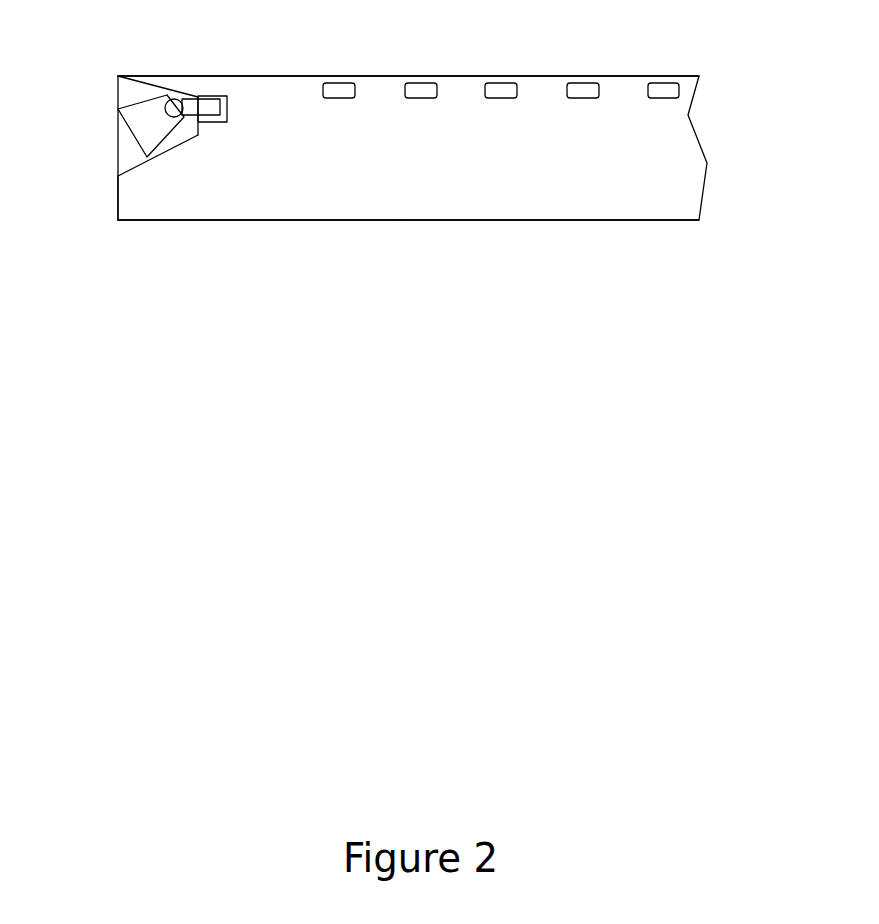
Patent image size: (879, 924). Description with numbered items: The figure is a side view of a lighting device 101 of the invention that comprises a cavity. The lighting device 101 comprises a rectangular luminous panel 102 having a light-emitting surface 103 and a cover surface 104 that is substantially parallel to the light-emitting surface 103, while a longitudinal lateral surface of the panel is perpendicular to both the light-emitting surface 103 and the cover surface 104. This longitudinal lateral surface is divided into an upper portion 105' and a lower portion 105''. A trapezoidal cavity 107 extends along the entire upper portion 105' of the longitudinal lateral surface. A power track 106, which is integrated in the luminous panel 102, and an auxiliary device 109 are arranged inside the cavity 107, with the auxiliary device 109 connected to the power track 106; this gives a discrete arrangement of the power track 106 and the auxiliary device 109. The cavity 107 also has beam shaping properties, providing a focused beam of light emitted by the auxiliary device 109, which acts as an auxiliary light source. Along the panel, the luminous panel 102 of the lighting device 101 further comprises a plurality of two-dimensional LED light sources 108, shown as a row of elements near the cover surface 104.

The lighting device 101 is at (702, 200).
The rectangular luminous panel 102 is at (610, 202).
The light-emitting surface 103 is at (248, 222).
The cover surface 104 is at (538, 74).
The upper portion 105' is at (225, 69).
The lower portion 105'' is at (149, 234).
The power track 106 is at (227, 96).
The trapezoidal cavity 107 is at (127, 152).
The 2D LED light sources 108 is at (503, 83).
The auxiliary device 109 is at (135, 122).